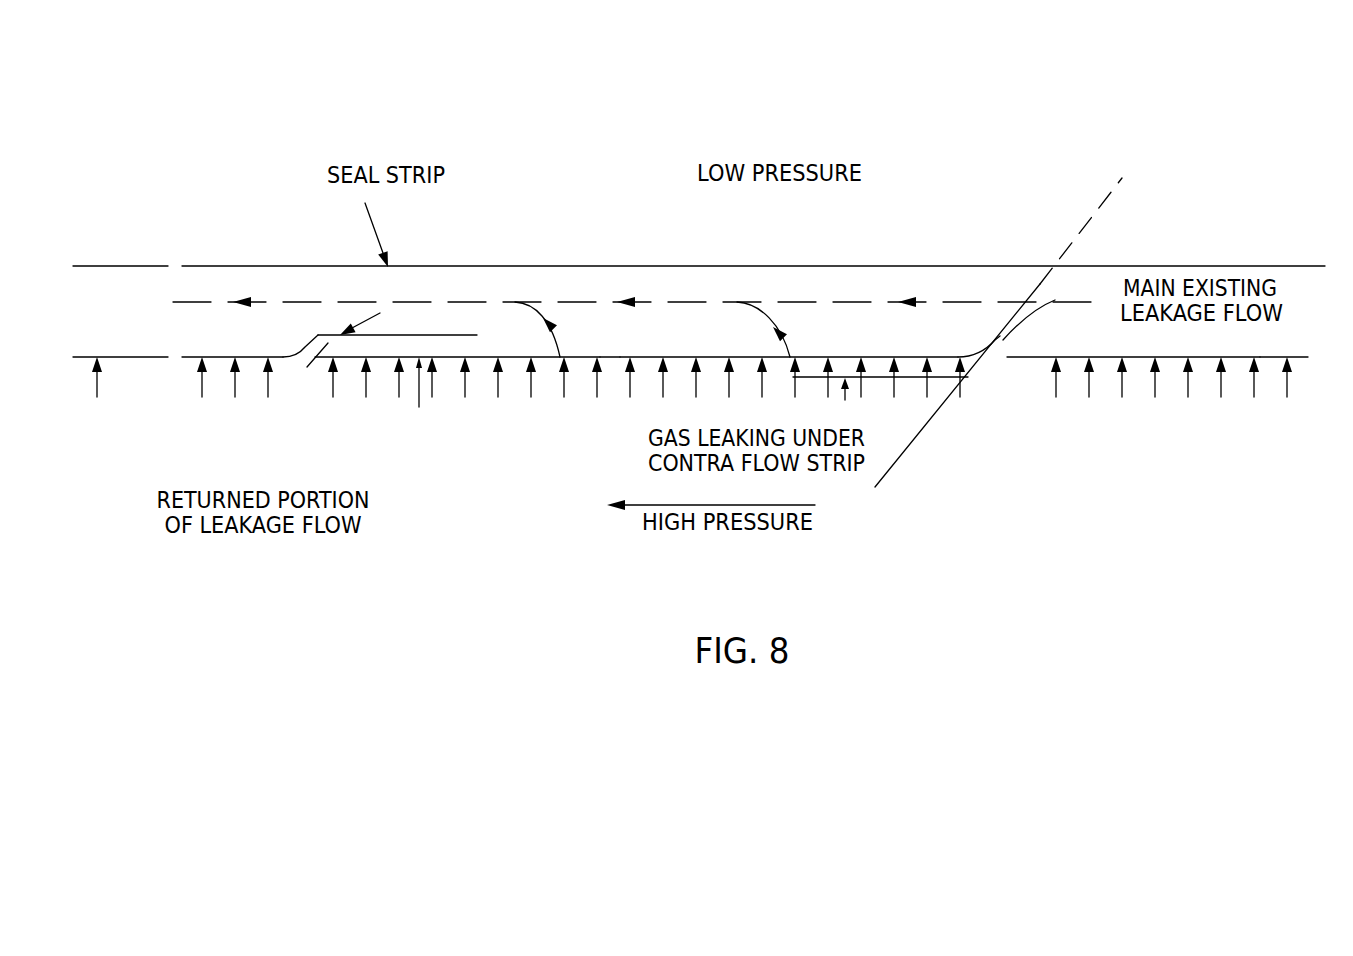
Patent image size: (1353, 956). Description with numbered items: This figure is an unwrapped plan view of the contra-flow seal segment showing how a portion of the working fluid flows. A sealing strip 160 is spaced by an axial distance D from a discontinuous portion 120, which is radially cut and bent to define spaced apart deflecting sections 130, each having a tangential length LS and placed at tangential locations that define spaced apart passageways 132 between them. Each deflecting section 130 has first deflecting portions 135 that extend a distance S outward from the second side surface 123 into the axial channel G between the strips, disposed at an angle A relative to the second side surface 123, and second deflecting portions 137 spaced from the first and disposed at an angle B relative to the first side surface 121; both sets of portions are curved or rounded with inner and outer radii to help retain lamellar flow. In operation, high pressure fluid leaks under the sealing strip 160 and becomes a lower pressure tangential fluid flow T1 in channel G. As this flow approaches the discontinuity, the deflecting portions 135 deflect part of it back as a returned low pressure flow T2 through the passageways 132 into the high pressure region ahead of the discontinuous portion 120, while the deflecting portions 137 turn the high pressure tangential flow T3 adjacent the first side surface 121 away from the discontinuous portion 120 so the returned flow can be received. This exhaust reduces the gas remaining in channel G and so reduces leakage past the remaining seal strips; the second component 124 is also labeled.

The discontinuous portion 120 is at (253, 90).
The first side surface 121 is at (383, 357).
The second side surface 123 is at (1272, 357).
The second component 124 is at (609, 358).
The deflecting section 130 is at (190, 358).
The passageway 132 is at (296, 379).
The first deflecting portion 135 is at (294, 351).
The second deflecting portion 137 is at (312, 367).
The sealing strip 160 is at (508, 266).
The axial distance D is at (100, 252).
The tangential length LS is at (982, 238).
The distance S is at (418, 321).
The channel G is at (900, 276).
The angle A is at (1107, 343).
The angle B is at (1123, 371).
The tangential fluid flow T1 is at (600, 302).
The deflected low pressure tangential fluid flow T2 is at (280, 368).
The high upstream pressure tangential fluid flow T3 is at (635, 507).